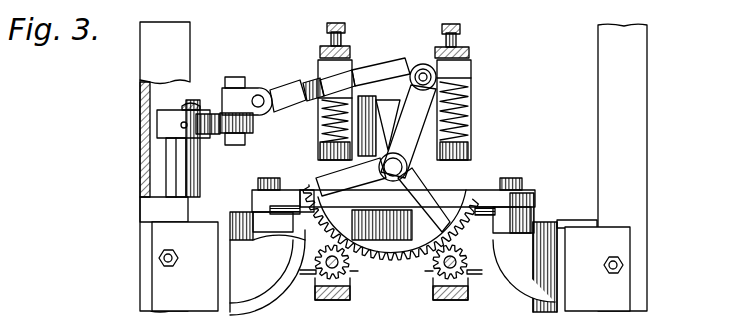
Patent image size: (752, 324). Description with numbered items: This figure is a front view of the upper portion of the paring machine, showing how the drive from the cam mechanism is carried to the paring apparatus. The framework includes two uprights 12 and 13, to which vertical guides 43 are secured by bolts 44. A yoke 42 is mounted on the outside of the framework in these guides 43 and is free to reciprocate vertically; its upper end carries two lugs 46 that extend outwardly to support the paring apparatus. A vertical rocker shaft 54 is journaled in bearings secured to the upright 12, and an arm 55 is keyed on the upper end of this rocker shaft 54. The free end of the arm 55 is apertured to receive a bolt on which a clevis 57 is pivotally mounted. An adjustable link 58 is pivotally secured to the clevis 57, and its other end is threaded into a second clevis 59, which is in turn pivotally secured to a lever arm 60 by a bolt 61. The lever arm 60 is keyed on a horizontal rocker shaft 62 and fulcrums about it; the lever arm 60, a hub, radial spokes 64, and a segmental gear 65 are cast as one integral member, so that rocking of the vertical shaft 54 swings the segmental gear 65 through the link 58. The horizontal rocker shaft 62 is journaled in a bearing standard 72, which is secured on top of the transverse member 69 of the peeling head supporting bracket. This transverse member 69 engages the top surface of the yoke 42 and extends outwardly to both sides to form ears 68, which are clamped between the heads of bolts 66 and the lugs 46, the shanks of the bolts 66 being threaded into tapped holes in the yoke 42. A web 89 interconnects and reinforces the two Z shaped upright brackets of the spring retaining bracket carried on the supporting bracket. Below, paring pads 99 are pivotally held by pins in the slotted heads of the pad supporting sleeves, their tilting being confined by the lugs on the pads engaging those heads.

The upright 12 is at (148, 62).
The upright 13 is at (633, 55).
The yoke 42 is at (582, 217).
The vertical guides 43 is at (166, 237).
The bolts 44 is at (160, 262).
The lugs 46 is at (272, 234).
The vertical rocker shaft 54 is at (176, 167).
The arm 55 is at (164, 124).
The clevis 57 is at (234, 98).
The adjustable link 58 is at (300, 76).
The clevis 59 is at (398, 68).
The lever arm 60 is at (440, 110).
The bolt 61 is at (462, 70).
The horizontal rocker shaft 62 is at (452, 186).
The radial spokes 64 is at (382, 225).
The segmental gear 65 is at (390, 254).
The bolts 66 is at (260, 184).
The ears 68 is at (262, 196).
The transverse member 69 is at (332, 184).
The bearing standard 72 is at (457, 184).
The web 89 is at (338, 114).
The paring pads 99 is at (300, 274).